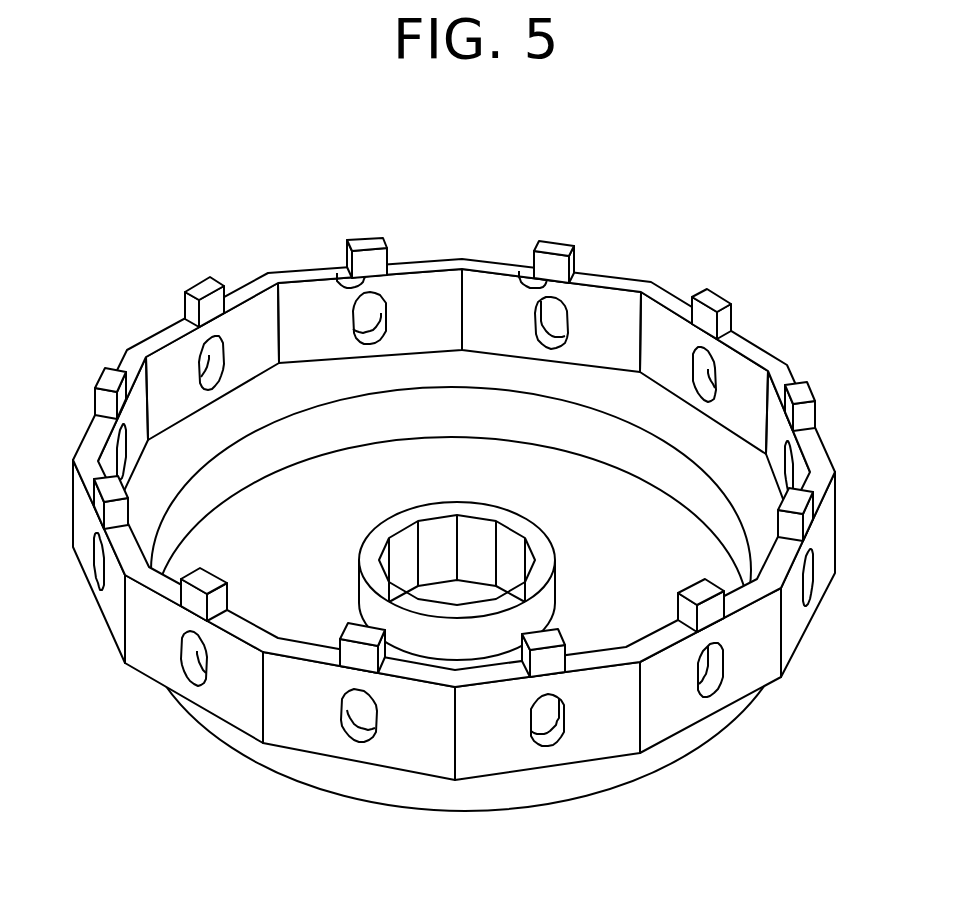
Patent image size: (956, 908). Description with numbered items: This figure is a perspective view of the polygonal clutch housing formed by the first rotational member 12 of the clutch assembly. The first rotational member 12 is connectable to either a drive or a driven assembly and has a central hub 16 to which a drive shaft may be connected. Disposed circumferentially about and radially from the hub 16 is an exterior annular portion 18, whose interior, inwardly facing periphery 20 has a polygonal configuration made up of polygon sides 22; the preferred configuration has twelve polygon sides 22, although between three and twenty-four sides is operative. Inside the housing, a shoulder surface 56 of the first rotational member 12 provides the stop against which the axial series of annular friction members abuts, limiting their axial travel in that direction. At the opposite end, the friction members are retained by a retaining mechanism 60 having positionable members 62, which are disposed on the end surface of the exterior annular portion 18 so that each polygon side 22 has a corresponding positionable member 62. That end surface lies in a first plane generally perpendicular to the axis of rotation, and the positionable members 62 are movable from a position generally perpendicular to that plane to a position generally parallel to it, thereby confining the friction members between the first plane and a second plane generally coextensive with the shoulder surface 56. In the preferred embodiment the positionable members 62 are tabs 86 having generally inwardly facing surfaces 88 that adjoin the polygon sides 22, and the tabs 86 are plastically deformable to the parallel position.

The first rotational member 12 is at (450, 499).
The hub 16 is at (520, 613).
The exterior annular portion 18 is at (430, 252).
The interior periphery 20 is at (313, 310).
The polygon sides 22 is at (278, 353).
The shoulder surface 56 is at (760, 478).
The retaining mechanism 60 is at (75, 503).
The positionable members 62 is at (812, 393).
The tabs 86 is at (557, 248).
The inwardly facing surfaces 88 is at (338, 273).